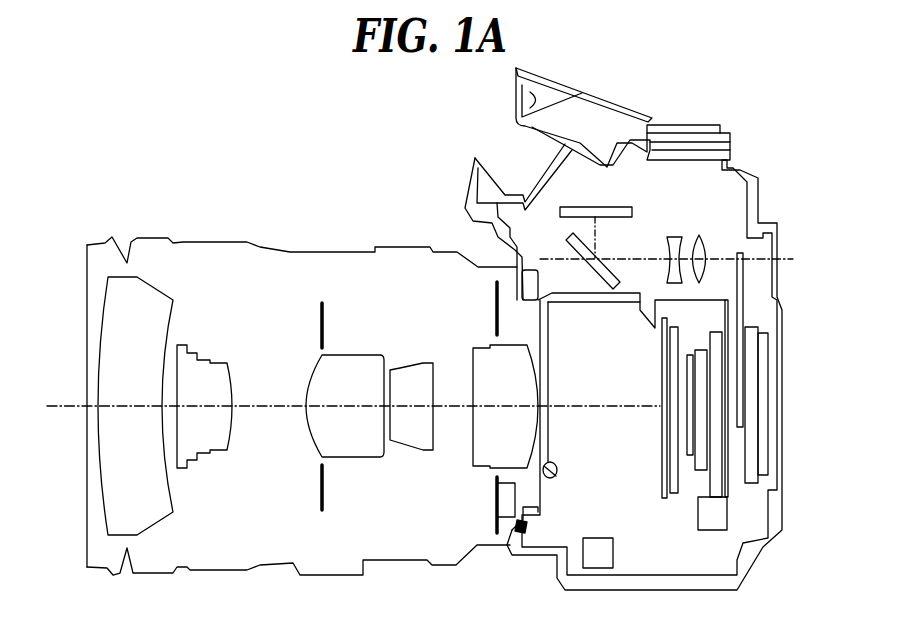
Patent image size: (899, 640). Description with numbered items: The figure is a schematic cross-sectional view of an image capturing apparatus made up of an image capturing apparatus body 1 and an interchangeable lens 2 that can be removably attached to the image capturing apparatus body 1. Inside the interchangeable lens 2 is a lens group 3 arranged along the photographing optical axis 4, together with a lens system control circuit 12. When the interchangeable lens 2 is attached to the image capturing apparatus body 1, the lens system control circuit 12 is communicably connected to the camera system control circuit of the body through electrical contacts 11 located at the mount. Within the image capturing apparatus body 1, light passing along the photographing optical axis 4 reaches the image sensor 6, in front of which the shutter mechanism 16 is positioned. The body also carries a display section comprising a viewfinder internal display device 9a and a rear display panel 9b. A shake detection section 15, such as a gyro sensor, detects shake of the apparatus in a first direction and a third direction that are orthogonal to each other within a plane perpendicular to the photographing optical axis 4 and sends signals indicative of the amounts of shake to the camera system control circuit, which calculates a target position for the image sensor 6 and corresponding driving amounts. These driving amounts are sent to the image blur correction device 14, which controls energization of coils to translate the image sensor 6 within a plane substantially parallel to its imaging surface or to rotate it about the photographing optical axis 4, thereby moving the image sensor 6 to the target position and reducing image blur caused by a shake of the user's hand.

The image capturing apparatus body 1 is at (735, 113).
The interchangeable lens 2 is at (312, 399).
The lens group 3 is at (279, 531).
The photographing optical axis 4 is at (50, 413).
The image sensor 6 is at (708, 387).
The viewfinder internal display device 9a is at (763, 413).
The rear display panel 9b is at (708, 226).
The electrical contacts 11 is at (522, 530).
The lens system control circuit 12 is at (483, 512).
The image blur correction device 14 is at (710, 530).
The shake detection section 15 is at (598, 560).
The shutter mechanism 16 is at (666, 500).